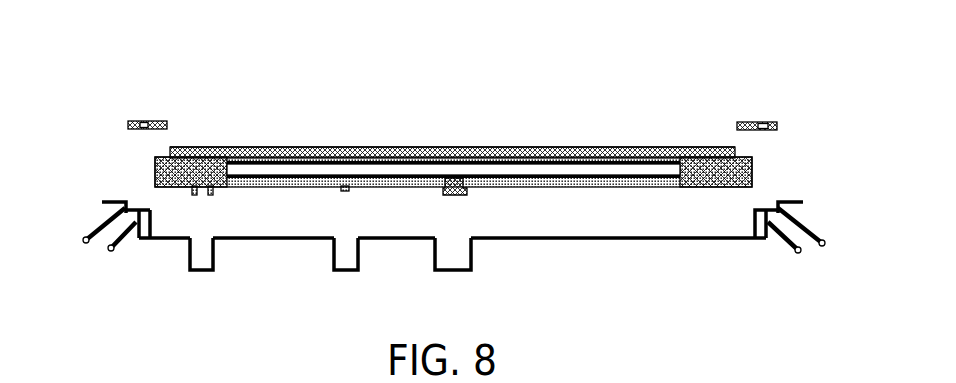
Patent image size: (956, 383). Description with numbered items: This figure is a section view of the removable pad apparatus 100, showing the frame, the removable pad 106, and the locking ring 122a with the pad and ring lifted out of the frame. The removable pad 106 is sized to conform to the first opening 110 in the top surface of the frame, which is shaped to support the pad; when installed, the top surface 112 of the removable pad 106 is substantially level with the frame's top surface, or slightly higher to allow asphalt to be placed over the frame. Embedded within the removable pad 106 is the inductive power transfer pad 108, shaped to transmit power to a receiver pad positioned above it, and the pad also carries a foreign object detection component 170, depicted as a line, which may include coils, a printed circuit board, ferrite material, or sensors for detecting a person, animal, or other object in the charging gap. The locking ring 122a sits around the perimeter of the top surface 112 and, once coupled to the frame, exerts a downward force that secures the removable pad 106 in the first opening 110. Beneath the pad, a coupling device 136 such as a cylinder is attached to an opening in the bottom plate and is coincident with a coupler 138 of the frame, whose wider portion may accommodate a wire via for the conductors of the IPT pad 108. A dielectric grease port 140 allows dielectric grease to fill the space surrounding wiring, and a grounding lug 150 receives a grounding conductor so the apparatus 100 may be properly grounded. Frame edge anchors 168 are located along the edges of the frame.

The removable pad apparatus 100 is at (120, 34).
The removable pad 106 is at (290, 140).
The inductive power transfer (IPT) pad 108 is at (380, 171).
The first opening 110 is at (150, 196).
The top surface of the removable pad 112 is at (472, 146).
The locking ring 122a is at (168, 118).
The coupling device 136 is at (470, 192).
The coupler 138 is at (215, 195).
The dielectric grease port 140 is at (190, 273).
The grounding lug 150 is at (340, 194).
The frame edge anchor 168 is at (88, 247).
The foreign object detection component 170 is at (694, 152).